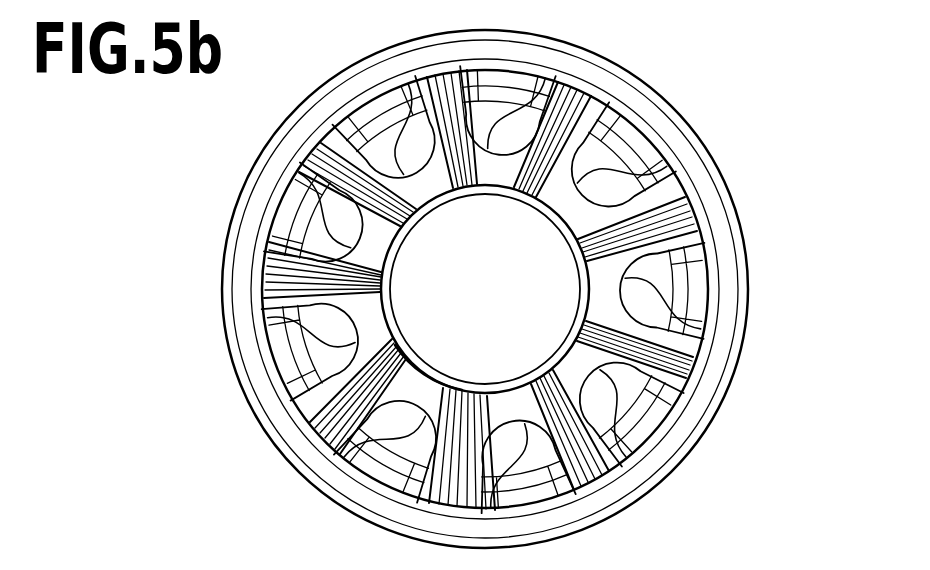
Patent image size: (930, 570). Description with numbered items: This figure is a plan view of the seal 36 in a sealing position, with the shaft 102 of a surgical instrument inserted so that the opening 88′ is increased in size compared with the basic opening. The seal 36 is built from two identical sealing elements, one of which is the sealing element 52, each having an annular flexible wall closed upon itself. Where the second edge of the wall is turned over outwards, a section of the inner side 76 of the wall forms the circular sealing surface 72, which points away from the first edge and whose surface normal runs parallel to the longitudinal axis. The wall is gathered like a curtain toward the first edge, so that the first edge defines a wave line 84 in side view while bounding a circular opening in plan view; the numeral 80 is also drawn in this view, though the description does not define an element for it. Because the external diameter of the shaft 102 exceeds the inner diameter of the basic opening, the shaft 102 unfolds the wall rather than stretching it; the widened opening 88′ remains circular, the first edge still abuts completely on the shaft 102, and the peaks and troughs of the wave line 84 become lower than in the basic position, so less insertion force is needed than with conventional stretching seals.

The seal 36 is at (716, 110).
The sealing element 52 is at (770, 202).
The sealing surface 72 is at (268, 193).
The inner side 76 is at (393, 147).
The blade pocket 80 is at (578, 100).
The wave line 84 is at (490, 187).
The opening 88′ is at (428, 373).
The shaft 102 is at (566, 347).